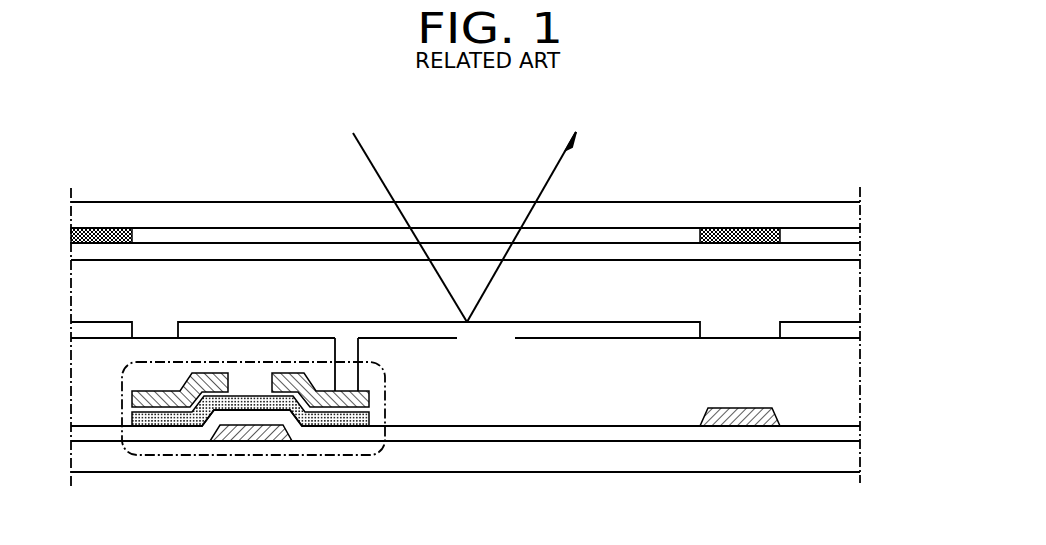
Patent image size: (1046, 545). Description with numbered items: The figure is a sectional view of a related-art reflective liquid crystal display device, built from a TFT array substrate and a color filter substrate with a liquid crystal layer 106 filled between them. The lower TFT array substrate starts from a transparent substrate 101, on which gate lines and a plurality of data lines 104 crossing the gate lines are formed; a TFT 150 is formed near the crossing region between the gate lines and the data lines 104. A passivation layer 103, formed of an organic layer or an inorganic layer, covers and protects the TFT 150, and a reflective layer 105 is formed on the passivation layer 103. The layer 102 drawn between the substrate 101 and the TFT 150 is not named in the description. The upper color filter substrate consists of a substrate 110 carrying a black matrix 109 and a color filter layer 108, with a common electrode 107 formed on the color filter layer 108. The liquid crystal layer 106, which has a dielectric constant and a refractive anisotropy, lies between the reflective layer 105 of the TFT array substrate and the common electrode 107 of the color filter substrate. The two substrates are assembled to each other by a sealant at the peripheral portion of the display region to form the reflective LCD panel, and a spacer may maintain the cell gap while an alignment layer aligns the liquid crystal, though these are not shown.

The transparent substrate 101 is at (853, 456).
The gate insulating layer 102 is at (853, 430).
The passivation layer 103 is at (853, 383).
The data line 104 is at (741, 426).
The reflective layer 105 is at (853, 330).
The liquid crystal layer 106 is at (853, 289).
The common electrode 107 is at (853, 251).
The color filter layer 108 is at (853, 232).
The black matrix 109 is at (741, 228).
The substrate 110 is at (856, 207).
The TFT 150 is at (251, 455).